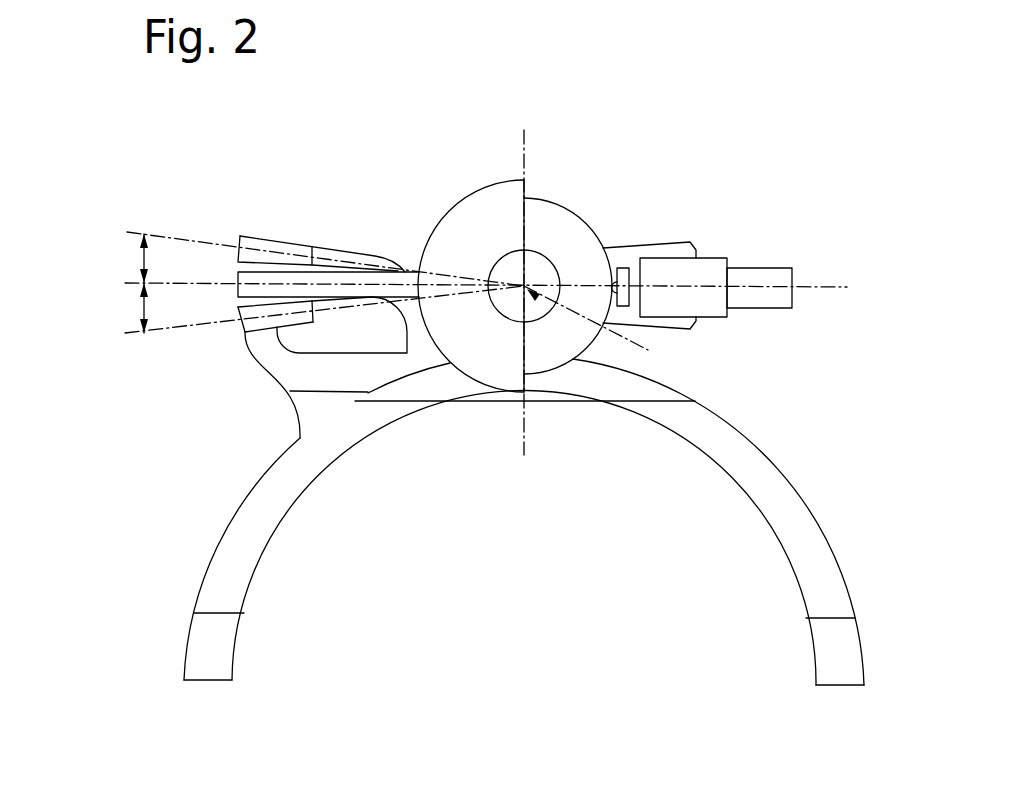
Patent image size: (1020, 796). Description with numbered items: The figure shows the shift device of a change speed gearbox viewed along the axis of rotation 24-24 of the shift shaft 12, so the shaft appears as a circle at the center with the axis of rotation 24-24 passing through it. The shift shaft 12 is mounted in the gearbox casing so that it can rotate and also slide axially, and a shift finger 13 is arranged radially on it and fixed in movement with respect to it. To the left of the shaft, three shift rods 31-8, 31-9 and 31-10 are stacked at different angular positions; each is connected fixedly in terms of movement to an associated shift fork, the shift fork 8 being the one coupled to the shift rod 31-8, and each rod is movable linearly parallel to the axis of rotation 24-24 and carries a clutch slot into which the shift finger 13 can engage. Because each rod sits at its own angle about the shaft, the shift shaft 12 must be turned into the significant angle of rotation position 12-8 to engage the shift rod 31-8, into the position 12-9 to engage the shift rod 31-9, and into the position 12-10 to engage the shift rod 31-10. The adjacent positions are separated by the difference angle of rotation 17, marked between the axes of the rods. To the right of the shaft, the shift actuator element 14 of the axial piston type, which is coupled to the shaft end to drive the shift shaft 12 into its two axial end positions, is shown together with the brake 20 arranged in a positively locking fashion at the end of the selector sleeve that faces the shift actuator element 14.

The shift fork 8 is at (836, 544).
The shift shaft 12 is at (547, 238).
The significant angle of rotation position 12-8 is at (457, 284).
The significant angle of rotation position 12-9 is at (296, 250).
The significant angle of rotation position 12-10 is at (289, 319).
The shift finger 13 is at (415, 272).
The shift actuator element 14 is at (467, 382).
The difference angle of rotation 17 is at (142, 262).
The brake 20 is at (740, 243).
The axis of rotation 24-24 is at (620, 325).
The shift rod 31-8 is at (238, 272).
The shift rod 31-9 is at (358, 244).
The shift rod 31-10 is at (263, 384).